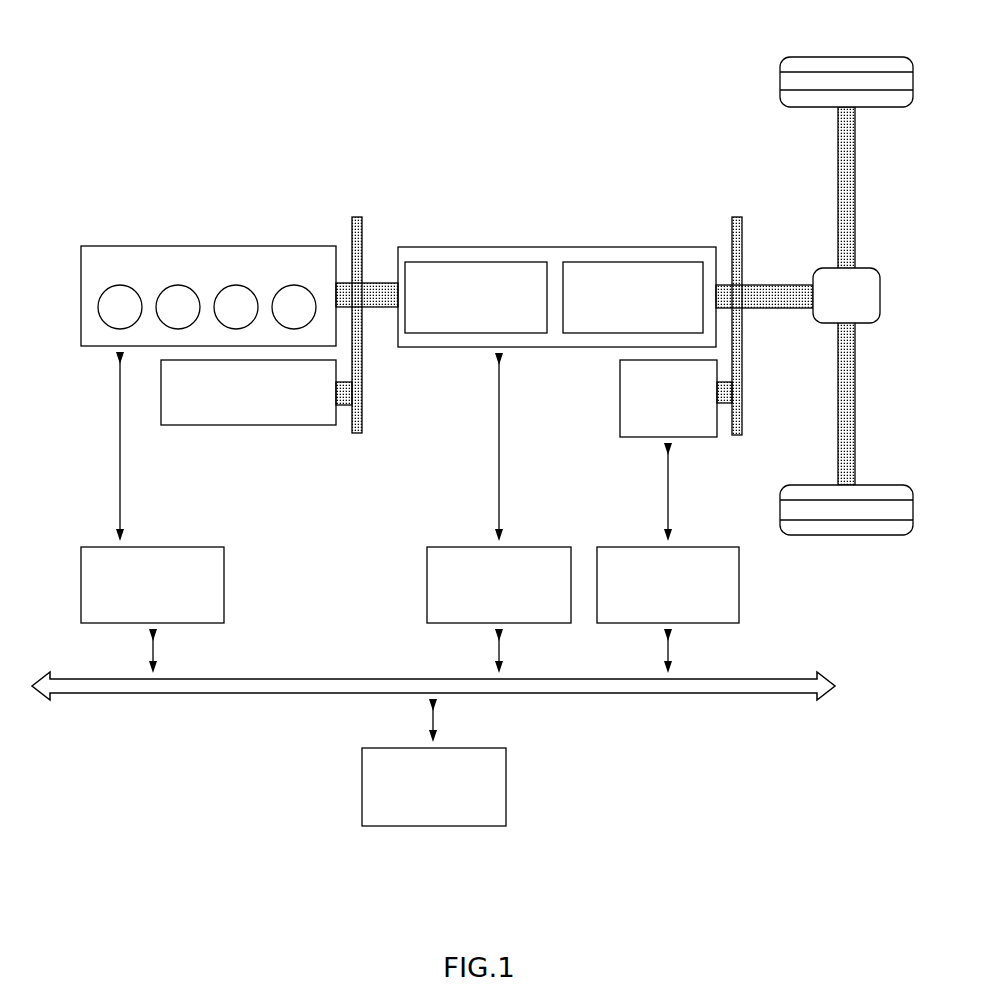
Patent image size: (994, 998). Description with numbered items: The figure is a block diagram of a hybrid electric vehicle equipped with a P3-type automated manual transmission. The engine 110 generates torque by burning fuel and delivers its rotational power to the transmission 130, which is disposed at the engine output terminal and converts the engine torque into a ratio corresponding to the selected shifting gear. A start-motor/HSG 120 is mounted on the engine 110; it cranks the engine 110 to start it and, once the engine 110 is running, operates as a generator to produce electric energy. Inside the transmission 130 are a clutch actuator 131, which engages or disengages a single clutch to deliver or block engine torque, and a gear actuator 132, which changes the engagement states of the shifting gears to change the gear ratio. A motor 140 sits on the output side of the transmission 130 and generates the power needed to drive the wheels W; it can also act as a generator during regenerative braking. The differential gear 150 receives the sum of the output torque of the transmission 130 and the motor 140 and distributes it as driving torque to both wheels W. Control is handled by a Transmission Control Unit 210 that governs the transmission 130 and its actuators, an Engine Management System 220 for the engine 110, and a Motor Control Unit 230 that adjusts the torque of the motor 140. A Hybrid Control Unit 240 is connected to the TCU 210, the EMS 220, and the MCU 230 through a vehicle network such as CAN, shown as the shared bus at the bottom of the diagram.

The engine 110 is at (208, 246).
The start-motor/HSG 120 is at (244, 425).
The transmission 130 is at (563, 247).
The clutch actuator 131 is at (475, 262).
The gear actuator 132 is at (631, 262).
The motor 140 is at (620, 397).
The differential gear 150 is at (868, 268).
The Transmission Control Unit (TCU) 210 is at (539, 547).
The Engine Management System (EMS) 220 is at (192, 547).
The Motor Control Unit (MCU) 230 is at (709, 547).
The Hybrid Control Unit (HCU) 240 is at (473, 748).
The wheels W is at (847, 57).